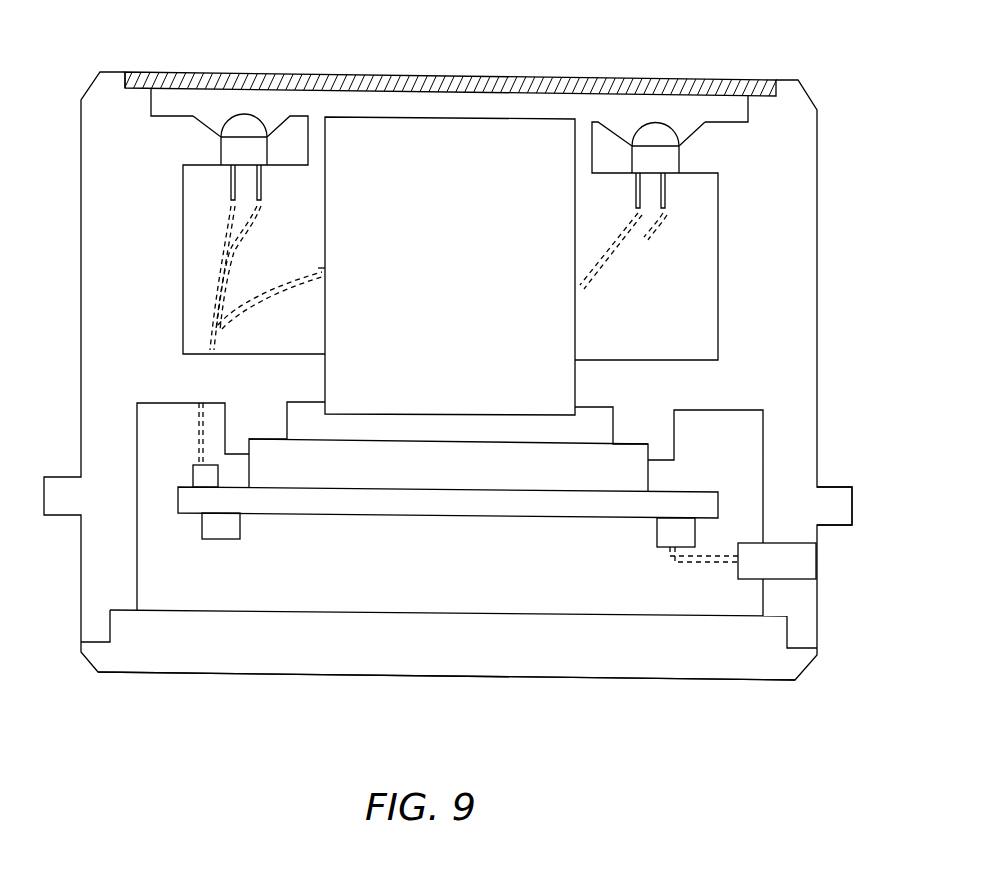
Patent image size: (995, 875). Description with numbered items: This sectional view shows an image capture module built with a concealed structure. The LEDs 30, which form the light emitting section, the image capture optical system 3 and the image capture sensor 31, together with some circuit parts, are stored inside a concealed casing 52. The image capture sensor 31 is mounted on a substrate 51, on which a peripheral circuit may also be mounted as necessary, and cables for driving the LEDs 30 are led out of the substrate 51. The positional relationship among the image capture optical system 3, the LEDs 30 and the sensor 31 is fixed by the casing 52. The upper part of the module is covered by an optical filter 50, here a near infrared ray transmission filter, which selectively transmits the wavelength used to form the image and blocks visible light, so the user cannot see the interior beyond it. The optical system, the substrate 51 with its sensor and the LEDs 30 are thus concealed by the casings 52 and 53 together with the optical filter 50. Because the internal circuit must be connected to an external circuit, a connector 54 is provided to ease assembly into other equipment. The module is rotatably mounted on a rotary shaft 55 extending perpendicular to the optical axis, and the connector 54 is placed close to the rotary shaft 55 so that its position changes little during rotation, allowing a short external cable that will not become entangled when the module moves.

The image capture optical system 3 is at (577, 318).
The LEDs 30 is at (681, 155).
The image capture sensor 31 is at (363, 490).
The optical filter 50 is at (588, 76).
The substrate 51 is at (513, 518).
The casing 52 is at (818, 290).
The casing 53 is at (588, 678).
The connector 54 is at (816, 563).
The rotary shaft 55 is at (852, 500).